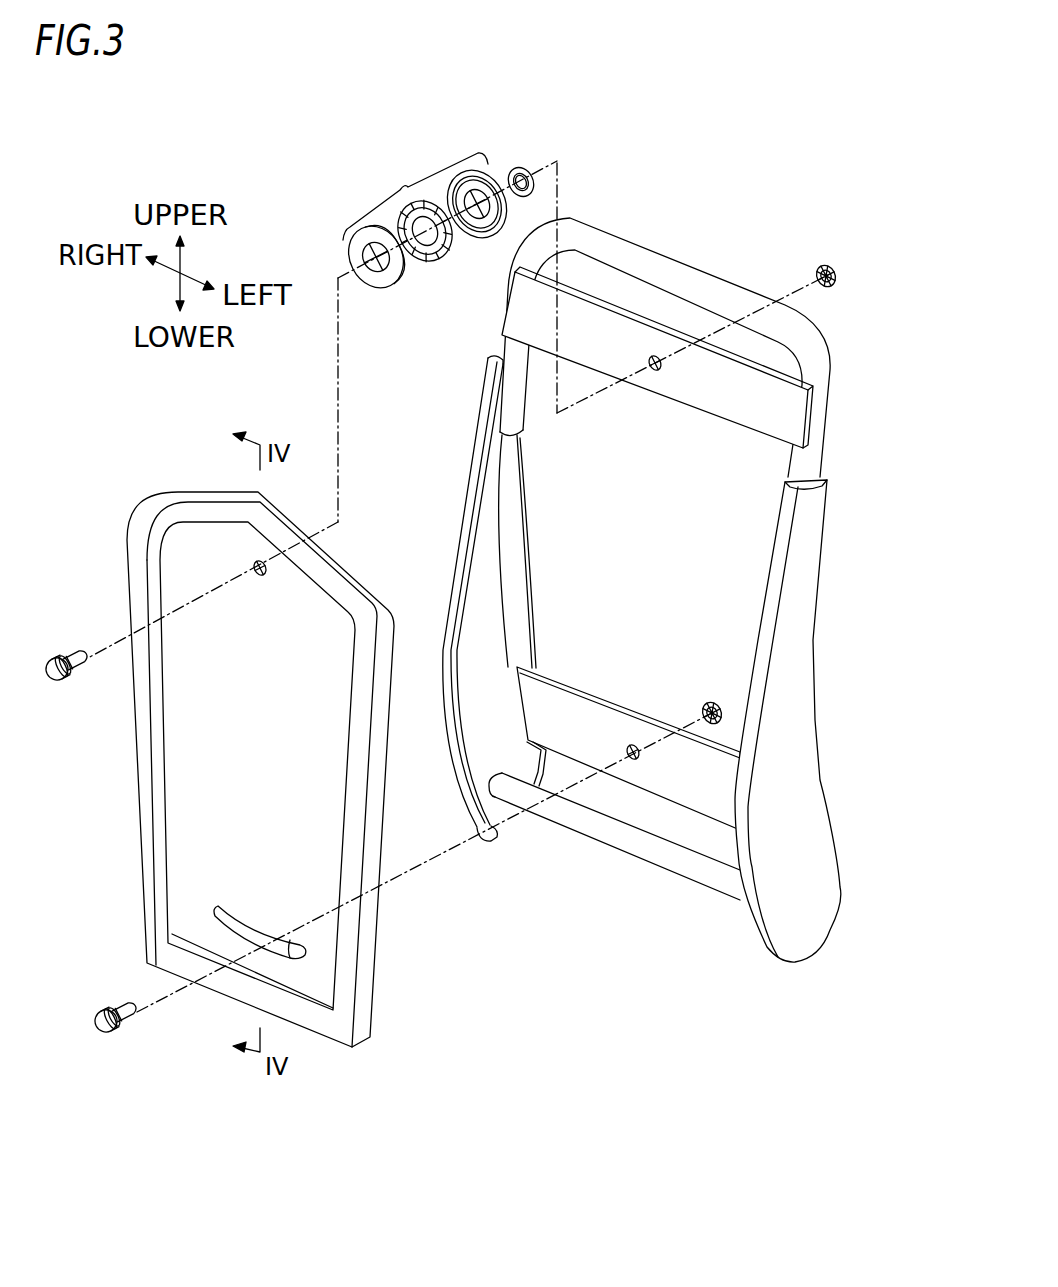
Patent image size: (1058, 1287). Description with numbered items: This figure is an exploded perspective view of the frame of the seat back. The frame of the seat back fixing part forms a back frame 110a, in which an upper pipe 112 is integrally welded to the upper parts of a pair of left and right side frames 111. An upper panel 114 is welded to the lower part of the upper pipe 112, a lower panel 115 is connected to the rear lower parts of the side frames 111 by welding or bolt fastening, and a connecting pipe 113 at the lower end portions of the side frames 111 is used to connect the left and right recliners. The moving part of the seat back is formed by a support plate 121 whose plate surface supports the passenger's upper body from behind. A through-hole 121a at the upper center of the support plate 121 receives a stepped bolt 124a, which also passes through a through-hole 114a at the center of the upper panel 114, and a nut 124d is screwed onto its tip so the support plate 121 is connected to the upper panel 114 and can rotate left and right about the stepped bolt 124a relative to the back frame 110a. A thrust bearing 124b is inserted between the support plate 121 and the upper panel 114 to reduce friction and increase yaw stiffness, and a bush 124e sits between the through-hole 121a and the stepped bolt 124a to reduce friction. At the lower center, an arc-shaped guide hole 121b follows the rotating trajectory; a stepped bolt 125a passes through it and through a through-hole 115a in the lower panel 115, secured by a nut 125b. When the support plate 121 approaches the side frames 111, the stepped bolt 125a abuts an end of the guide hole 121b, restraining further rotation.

The back frame 110a is at (667, 564).
The side frame 111 is at (443, 647).
The upper pipe 112 is at (667, 265).
The connecting pipe 113 is at (552, 823).
The upper panel 114 is at (657, 325).
The through-hole 114a is at (653, 372).
The lower panel 115 is at (628, 809).
The through-hole 115a is at (628, 762).
The support plate 121 is at (307, 724).
The through-hole 121a is at (254, 566).
The guide hole 121b is at (303, 944).
The stepped bolt 124a is at (58, 652).
The thrust bearing 124b is at (428, 225).
The nut 124d is at (829, 266).
The bush 124e is at (531, 168).
The stepped bolt 125a is at (112, 1037).
The nut 125b is at (710, 703).